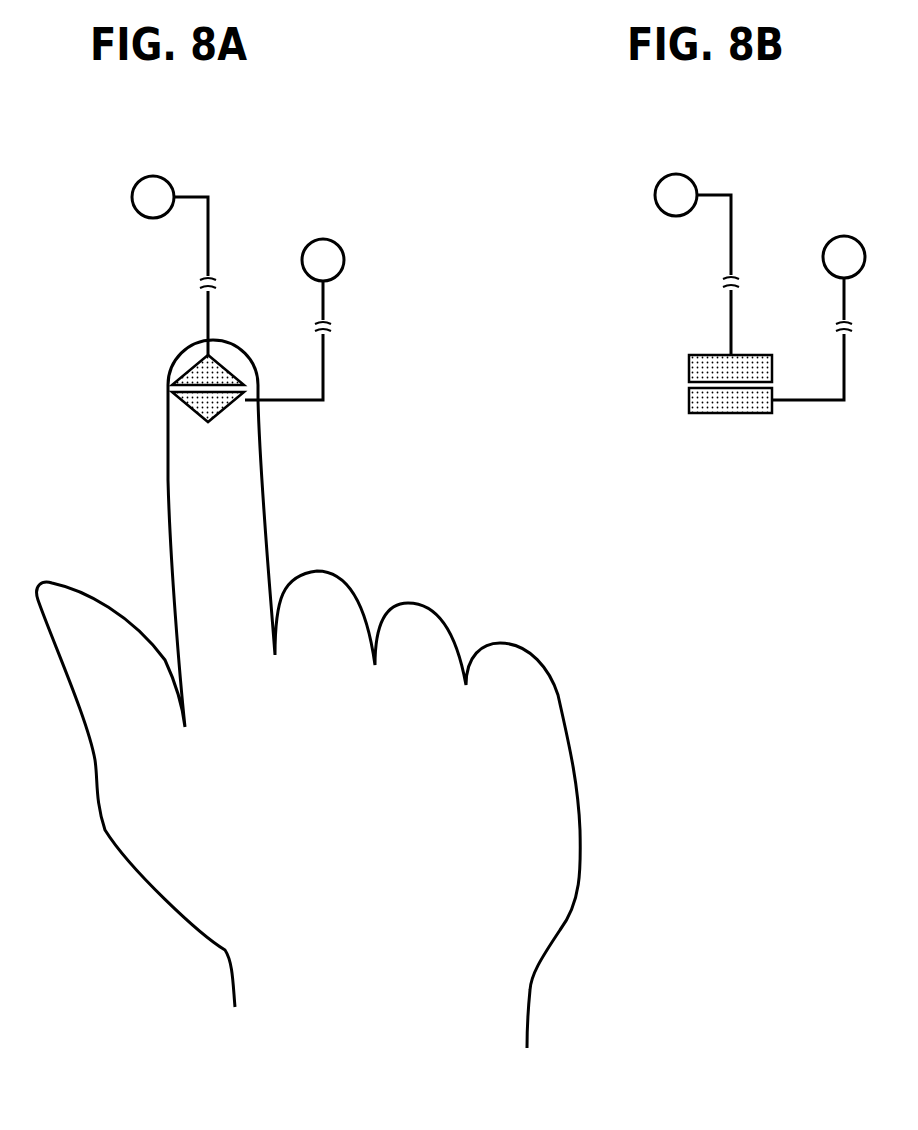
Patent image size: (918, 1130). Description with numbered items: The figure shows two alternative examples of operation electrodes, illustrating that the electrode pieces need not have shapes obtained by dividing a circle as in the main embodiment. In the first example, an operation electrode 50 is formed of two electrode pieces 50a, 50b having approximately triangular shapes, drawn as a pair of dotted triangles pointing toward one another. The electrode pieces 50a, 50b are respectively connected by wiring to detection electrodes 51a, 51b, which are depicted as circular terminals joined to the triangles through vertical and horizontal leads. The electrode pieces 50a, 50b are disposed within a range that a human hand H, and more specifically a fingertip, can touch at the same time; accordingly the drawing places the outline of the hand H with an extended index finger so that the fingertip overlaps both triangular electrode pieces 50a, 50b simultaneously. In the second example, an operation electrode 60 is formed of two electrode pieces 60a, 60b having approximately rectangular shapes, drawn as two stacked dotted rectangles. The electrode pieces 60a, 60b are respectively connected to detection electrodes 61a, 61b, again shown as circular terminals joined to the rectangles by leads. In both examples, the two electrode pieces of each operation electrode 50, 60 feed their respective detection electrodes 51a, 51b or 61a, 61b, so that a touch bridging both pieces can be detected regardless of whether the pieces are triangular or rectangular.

In FIG. 8A, the human hand H is at (577, 786).
In FIG. 8A, the operation electrode 50 is at (204, 417).
In FIG. 8A, the electrode piece 50a is at (186, 370).
In FIG. 8A, the electrode piece 50b is at (190, 413).
In FIG. 8A, the detection electrode 51a is at (153, 176).
In FIG. 8A, the detection electrode 51b is at (323, 239).
In FIG. 8B, the operation electrode 60 is at (692, 435).
In FIG. 8B, the electrode piece 60a is at (689, 368).
In FIG. 8B, the electrode piece 60b is at (689, 400).
In FIG. 8B, the detection electrode 61a is at (676, 174).
In FIG. 8B, the detection electrode 61b is at (844, 236).